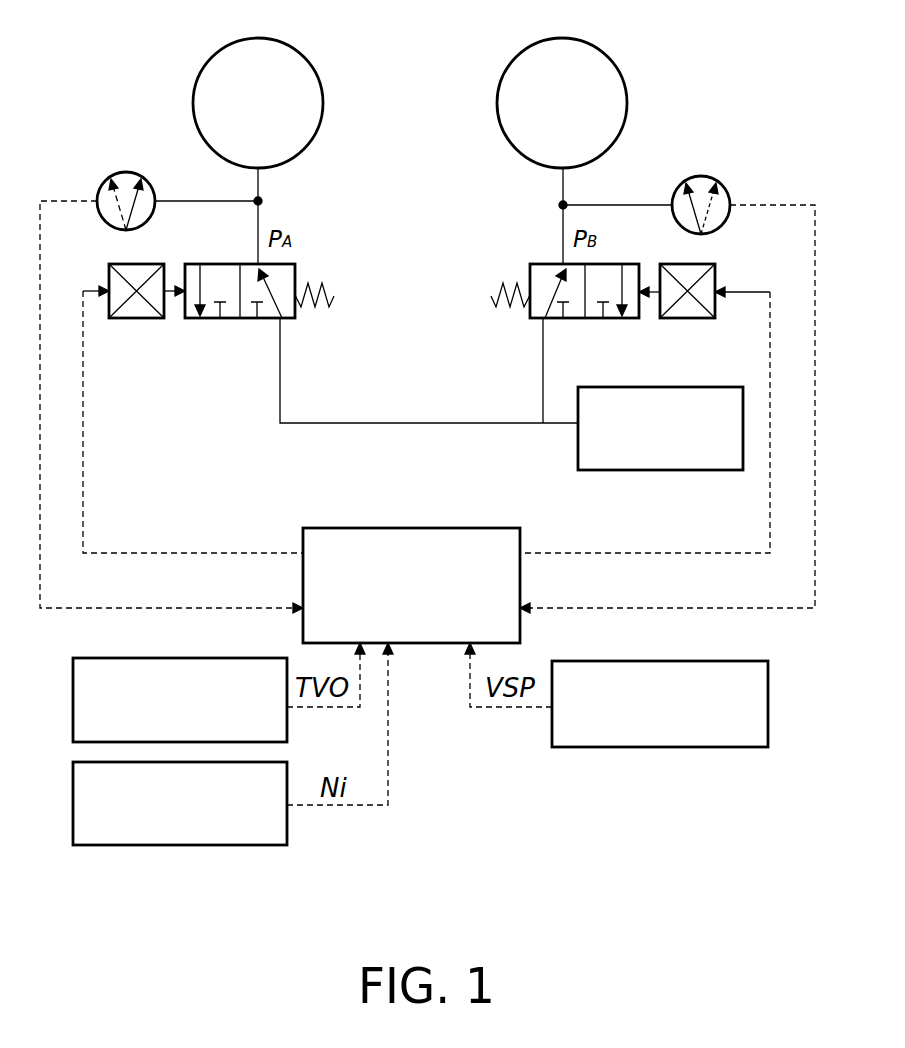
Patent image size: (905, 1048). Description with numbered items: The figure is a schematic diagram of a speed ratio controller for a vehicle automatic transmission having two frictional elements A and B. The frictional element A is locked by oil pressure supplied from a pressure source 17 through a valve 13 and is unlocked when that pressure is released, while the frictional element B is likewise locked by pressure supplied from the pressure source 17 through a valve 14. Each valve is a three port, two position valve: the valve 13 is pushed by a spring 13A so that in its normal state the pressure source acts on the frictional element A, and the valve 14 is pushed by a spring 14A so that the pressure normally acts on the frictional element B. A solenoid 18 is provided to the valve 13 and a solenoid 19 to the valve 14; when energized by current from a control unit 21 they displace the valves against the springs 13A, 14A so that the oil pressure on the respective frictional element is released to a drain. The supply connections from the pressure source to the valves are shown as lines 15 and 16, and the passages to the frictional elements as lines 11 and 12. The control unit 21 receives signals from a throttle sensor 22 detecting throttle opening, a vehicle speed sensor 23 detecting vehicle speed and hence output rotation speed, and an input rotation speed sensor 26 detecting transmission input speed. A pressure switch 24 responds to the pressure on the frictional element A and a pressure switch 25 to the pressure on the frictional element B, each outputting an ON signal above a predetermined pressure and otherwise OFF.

The frictional element A is at (282, 43).
The frictional element B is at (586, 43).
The hydraulic line to frictional element A 11 is at (263, 181).
The hydraulic line to frictional element B 12 is at (558, 181).
The valve 13 is at (293, 320).
The spring 13A is at (301, 297).
The valve 14 is at (528, 318).
The spring 14A is at (503, 289).
The supply line from pressure source to valve 13 15 is at (270, 405).
The supply line from pressure source to valve 14 16 is at (546, 381).
The pressure source 17 is at (721, 386).
The solenoid 18 is at (138, 318).
The solenoid 19 is at (673, 320).
The control unit 21 is at (440, 527).
The throttle sensor 22 is at (200, 657).
The vehicle speed sensor 23 is at (713, 660).
The pressure switch 24 is at (151, 222).
The pressure switch 25 is at (729, 194).
The input rotation speed sensor 26 is at (73, 784).